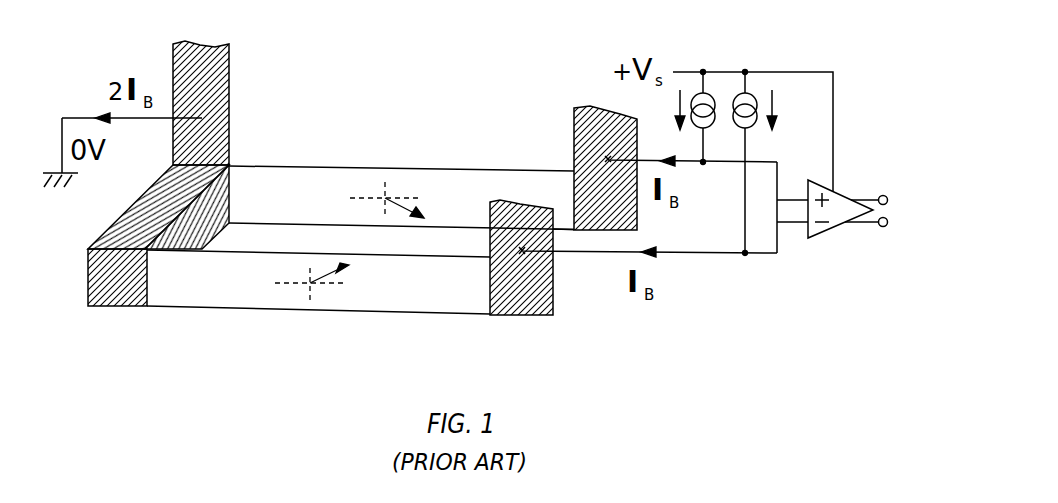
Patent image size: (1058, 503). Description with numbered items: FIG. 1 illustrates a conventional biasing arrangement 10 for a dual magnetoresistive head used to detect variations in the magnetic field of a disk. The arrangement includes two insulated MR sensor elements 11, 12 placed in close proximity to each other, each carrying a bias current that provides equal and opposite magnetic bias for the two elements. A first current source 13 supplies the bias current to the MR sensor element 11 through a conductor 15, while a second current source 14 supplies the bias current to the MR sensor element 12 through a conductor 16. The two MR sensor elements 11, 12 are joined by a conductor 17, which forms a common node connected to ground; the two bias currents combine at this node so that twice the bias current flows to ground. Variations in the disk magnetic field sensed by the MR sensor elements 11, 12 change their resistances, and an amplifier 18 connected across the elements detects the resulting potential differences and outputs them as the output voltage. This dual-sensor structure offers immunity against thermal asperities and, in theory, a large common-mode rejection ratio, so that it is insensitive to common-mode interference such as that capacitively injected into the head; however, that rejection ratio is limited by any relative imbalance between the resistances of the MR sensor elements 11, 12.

The biasing arrangement 10 is at (452, 90).
The MR sensor element 11 is at (318, 282).
The MR sensor element 12 is at (401, 198).
The current source 13 is at (767, 162).
The current source 14 is at (680, 117).
The conductor 15 is at (515, 310).
The conductor 16 is at (637, 232).
The conductor 17 is at (104, 287).
The amplifier 18 is at (808, 238).